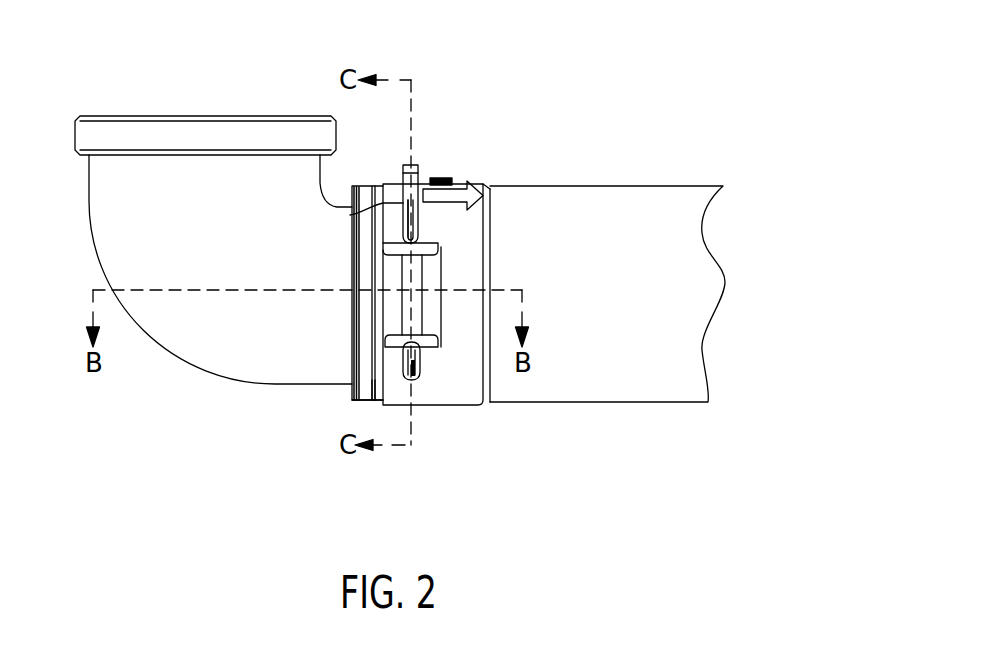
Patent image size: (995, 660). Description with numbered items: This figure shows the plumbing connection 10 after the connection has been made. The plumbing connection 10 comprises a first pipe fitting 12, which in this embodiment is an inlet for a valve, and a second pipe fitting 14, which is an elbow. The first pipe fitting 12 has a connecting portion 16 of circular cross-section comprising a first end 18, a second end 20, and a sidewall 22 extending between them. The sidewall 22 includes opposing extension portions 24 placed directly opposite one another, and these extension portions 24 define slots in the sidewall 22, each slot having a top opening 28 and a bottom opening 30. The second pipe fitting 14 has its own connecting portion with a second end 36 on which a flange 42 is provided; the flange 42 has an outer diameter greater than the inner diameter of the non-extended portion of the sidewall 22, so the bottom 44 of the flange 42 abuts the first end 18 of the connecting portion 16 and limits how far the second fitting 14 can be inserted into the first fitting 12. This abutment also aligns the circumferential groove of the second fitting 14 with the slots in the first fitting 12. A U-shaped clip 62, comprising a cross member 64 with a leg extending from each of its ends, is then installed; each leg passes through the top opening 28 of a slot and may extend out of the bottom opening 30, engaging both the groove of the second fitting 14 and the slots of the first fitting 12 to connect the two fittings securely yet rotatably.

The plumbing connection 10 is at (555, 87).
The first pipe fitting 12 is at (641, 186).
The second pipe fitting 14 is at (101, 251).
The connecting portion 16 is at (490, 460).
The first end 18 is at (373, 187).
The second end 20 is at (490, 242).
The sidewall 22 is at (430, 178).
The extension portions 24 is at (424, 313).
The top opening 28 is at (420, 227).
The bottom opening 30 is at (420, 367).
The second end 36 is at (352, 185).
The flange 42 is at (358, 399).
The bottom of the flange 44 is at (374, 386).
The U-shaped clip 62 is at (357, 201).
The cross member 64 is at (418, 167).